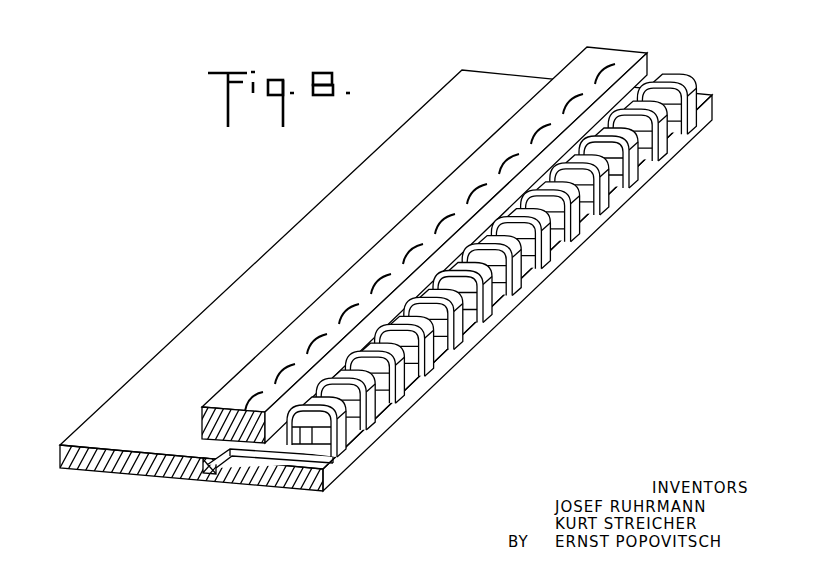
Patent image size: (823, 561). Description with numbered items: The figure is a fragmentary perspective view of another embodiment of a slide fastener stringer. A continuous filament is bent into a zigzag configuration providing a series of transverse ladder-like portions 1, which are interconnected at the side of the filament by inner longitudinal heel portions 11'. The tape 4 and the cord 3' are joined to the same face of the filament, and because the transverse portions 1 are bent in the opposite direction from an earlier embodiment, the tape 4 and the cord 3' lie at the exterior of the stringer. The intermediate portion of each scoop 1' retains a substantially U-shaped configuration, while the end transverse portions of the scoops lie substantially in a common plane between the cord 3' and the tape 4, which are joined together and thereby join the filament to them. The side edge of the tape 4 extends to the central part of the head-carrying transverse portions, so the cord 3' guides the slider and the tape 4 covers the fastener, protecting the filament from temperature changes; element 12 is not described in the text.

The tape 4 is at (472, 74).
The cord 3' is at (416, 237).
The scoop 1' is at (513, 258).
The clip 12 is at (470, 310).
The inner longitudinal heel portion 11' is at (205, 496).
The transverse ladder-like portion 1 is at (270, 486).